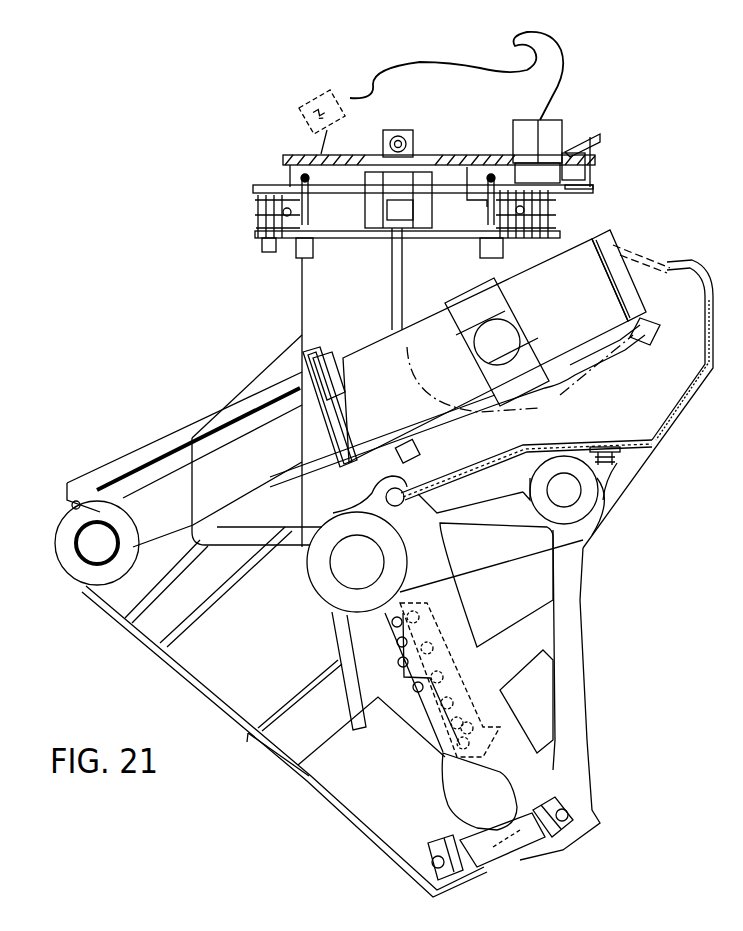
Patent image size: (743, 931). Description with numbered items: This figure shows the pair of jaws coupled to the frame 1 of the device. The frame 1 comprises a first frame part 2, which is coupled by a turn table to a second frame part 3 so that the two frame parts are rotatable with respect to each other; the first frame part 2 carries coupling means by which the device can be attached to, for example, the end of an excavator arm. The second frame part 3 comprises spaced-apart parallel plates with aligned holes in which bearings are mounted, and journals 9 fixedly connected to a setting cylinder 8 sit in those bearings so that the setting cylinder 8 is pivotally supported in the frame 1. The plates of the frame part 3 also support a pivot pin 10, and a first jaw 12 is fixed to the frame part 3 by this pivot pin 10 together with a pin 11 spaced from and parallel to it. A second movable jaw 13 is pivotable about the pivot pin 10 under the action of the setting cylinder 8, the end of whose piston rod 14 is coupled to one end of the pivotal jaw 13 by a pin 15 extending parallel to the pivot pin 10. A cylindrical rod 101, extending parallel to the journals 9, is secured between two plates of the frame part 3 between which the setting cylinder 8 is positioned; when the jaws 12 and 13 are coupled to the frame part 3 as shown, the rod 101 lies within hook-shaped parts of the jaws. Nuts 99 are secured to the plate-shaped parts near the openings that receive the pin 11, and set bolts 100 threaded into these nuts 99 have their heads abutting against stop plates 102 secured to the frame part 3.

The frame 1 is at (290, 130).
The first frame part 2 is at (397, 88).
The second frame part 3 is at (317, 315).
The setting cylinder 8 is at (573, 270).
The journals 9 is at (510, 337).
The pivot pin 10 is at (347, 570).
The pin 11 is at (573, 493).
The first jaw 12 is at (598, 718).
The second movable jaw 13 is at (280, 790).
The piston rod 14 is at (152, 503).
The pin 15 is at (83, 545).
The nuts 99 is at (617, 467).
The set bolts 100 is at (623, 458).
The cylindrical rod 101 is at (405, 492).
The stop plates 102 is at (603, 443).